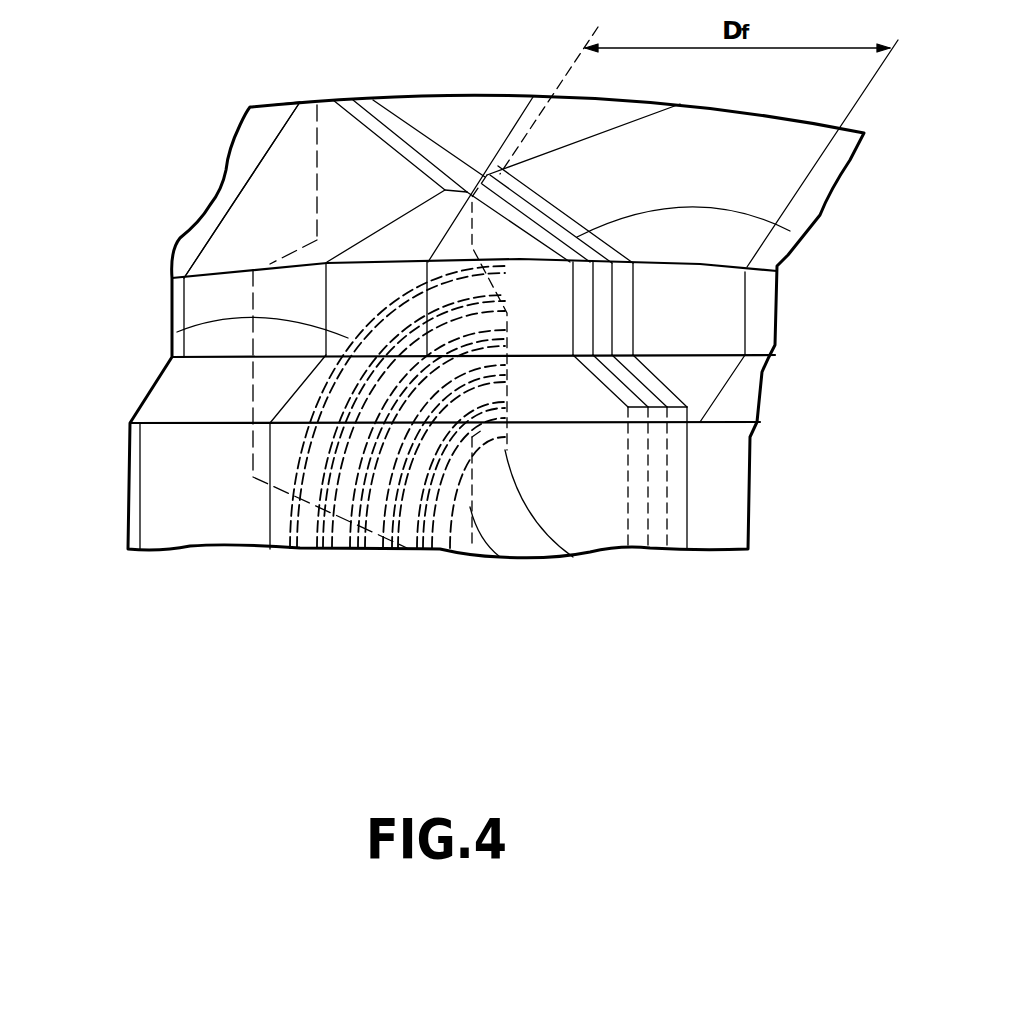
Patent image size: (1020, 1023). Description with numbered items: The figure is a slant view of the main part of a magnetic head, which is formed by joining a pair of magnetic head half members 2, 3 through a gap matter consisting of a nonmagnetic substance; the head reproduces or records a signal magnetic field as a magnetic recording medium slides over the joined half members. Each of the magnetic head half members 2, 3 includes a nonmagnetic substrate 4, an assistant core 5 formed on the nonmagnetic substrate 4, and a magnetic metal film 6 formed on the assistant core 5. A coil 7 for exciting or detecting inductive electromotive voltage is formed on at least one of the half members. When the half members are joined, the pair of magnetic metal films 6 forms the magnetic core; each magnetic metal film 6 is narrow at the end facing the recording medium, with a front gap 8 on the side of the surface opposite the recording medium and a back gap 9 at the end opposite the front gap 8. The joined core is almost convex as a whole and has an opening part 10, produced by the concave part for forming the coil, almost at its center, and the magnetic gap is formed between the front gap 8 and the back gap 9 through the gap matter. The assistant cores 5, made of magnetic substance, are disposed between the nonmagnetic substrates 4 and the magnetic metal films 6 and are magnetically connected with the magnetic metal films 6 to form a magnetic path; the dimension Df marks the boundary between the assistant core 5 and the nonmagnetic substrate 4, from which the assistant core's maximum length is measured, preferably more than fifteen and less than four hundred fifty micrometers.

The magnetic head half member 2 is at (215, 403).
The magnetic head half member 3 is at (667, 520).
The nonmagnetic substrate 4 is at (270, 117).
The assistant core 5 is at (337, 133).
The magnetic metal film 6 is at (445, 188).
The coil 7 is at (177, 332).
The front gap 8 is at (487, 175).
The back gap 9 is at (500, 557).
The opening part 10 is at (573, 557).